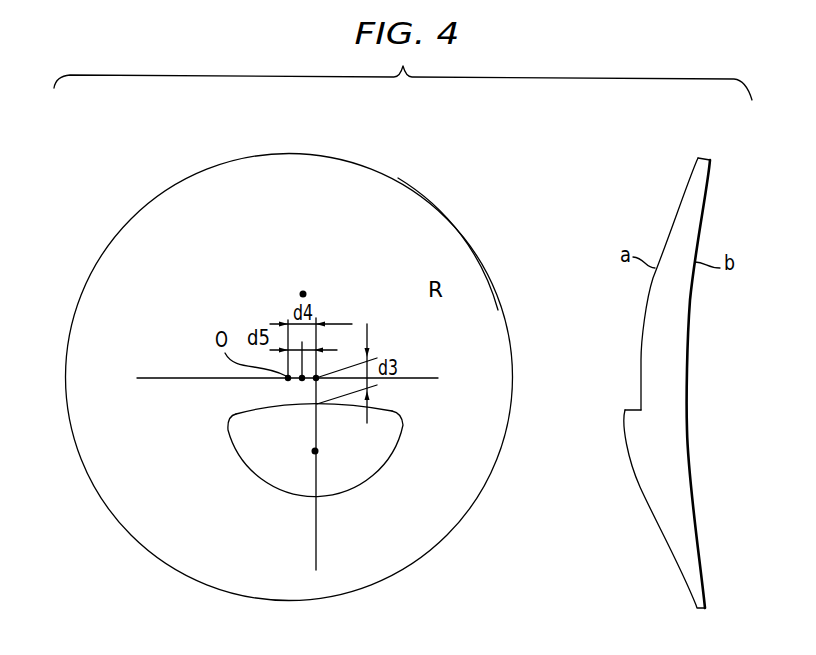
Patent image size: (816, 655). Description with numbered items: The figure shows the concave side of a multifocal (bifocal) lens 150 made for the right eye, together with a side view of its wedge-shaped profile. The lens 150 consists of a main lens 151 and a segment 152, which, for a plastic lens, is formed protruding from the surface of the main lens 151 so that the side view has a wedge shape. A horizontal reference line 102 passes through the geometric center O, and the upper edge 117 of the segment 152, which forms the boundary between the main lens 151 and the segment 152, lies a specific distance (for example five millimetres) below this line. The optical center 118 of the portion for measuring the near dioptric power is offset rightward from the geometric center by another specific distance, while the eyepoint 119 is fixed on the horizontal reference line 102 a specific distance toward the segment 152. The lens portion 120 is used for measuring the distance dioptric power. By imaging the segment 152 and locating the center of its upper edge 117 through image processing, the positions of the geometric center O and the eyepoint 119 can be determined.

The horizontal reference line 102 is at (162, 374).
The upper edge of the segment 117 is at (383, 409).
The optical center of the portion for measuring the near dioptric power 118 is at (312, 451).
The eyepoint 119 is at (302, 381).
The lens portion for measuring the distance dioptric power 120 is at (305, 292).
The multifocal lens 150 is at (401, 176).
The main lens 151 is at (462, 237).
The segment 152 is at (390, 507).